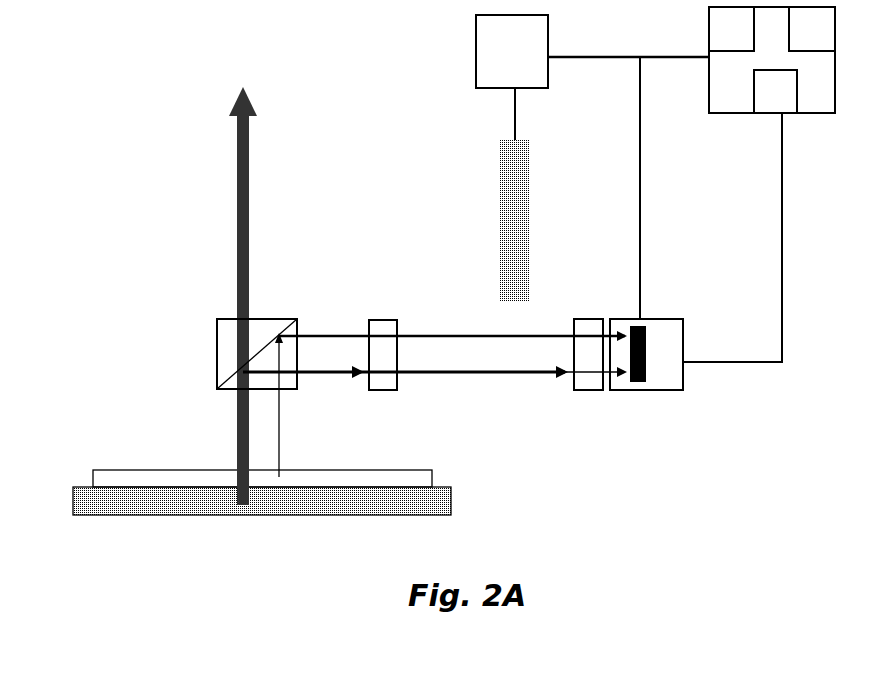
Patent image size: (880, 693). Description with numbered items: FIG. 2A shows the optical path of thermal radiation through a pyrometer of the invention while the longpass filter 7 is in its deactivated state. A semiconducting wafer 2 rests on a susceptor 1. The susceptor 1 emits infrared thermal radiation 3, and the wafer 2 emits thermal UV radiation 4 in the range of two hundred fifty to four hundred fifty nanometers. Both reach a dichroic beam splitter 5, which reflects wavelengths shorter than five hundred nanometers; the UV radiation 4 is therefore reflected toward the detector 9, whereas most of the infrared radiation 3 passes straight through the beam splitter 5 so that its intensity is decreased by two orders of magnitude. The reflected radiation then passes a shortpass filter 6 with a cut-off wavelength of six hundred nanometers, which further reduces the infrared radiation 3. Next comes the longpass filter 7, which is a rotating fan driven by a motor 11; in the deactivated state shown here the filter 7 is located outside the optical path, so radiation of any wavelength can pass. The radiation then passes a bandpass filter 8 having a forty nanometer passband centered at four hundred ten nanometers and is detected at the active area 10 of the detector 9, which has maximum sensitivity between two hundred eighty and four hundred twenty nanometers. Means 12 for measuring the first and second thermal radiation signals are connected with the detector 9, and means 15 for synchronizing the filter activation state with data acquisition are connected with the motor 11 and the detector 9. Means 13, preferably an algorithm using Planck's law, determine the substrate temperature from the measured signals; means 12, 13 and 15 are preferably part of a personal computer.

The susceptor 1 is at (72, 498).
The semiconducting wafer 2 is at (83, 467).
The infrared thermal radiation 3 is at (240, 455).
The thermal UV radiation 4 is at (288, 432).
The dichroic beam splitter 5 is at (228, 315).
The shortpass filter 6 is at (380, 313).
The longpass filter 7 is at (500, 278).
The bandpass filter 8 is at (596, 310).
The detector 9 is at (640, 390).
The active area 10 is at (650, 353).
The motor 11 is at (486, 51).
The means for measuring the first and second thermal radiation signal 12 is at (749, 216).
The means for determining a temperature 13 is at (812, 29).
The means for synchronizing 15 is at (651, 163).